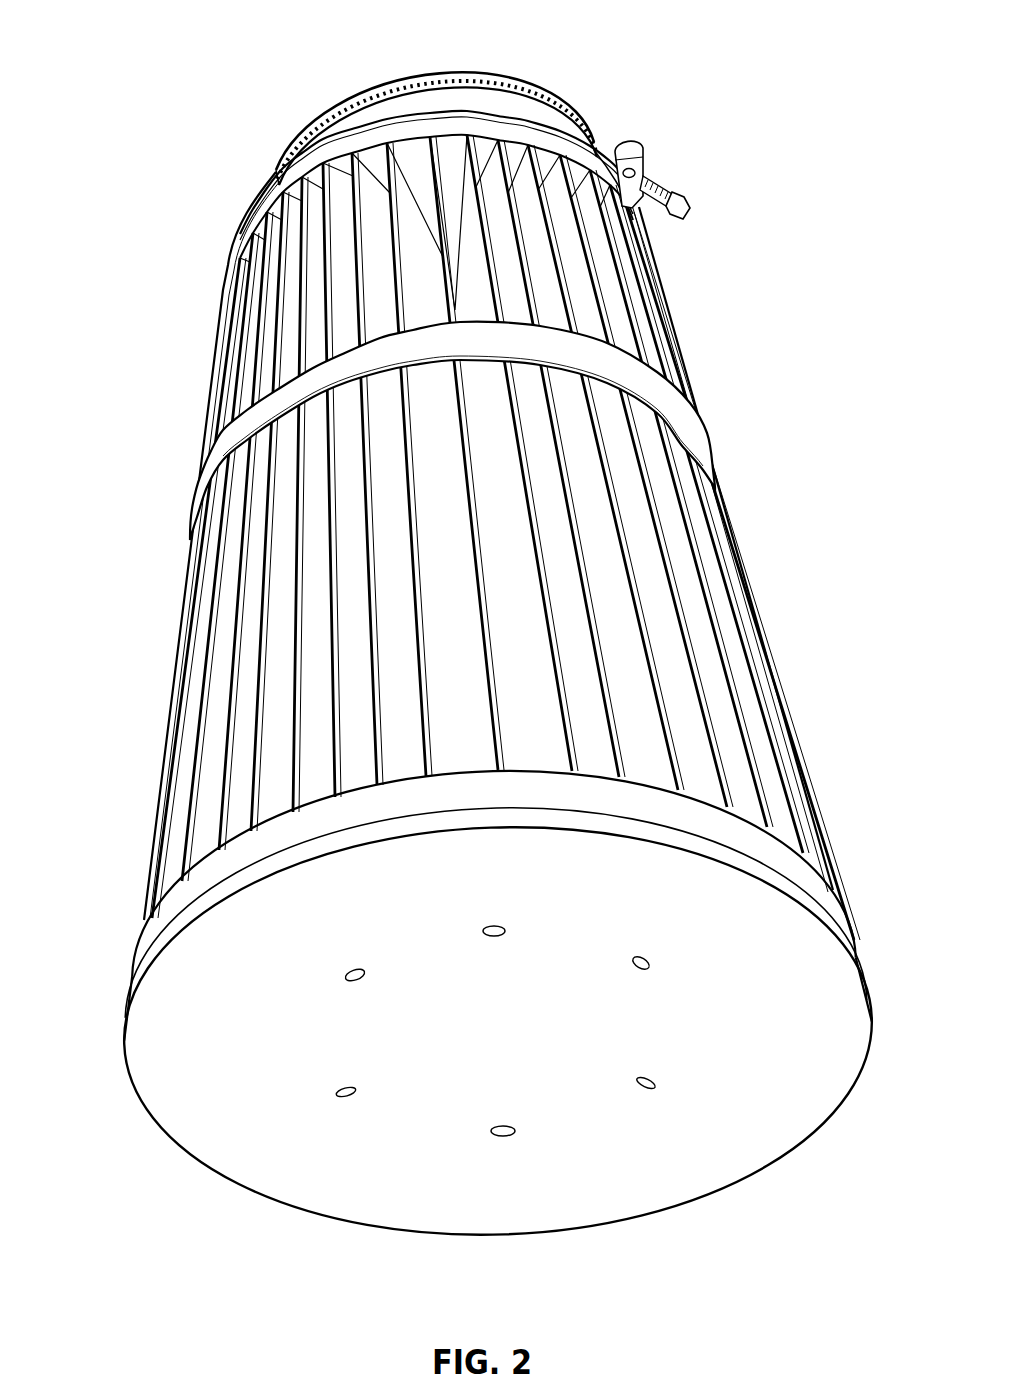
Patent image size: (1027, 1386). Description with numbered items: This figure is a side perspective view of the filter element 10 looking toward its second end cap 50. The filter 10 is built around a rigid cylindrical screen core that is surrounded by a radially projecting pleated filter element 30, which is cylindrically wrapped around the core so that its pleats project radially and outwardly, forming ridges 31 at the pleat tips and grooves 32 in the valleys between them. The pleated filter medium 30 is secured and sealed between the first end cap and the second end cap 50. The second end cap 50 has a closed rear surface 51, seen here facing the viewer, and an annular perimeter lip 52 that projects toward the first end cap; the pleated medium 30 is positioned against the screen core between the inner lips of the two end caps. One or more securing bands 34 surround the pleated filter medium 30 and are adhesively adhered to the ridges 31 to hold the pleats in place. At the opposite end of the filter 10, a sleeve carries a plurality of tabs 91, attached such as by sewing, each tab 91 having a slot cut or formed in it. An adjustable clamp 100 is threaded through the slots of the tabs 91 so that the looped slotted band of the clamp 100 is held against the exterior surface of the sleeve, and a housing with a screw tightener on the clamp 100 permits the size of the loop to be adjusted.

The filter element 10 is at (104, 52).
The pleated filter element 30 is at (327, 265).
The ridges 31 is at (377, 657).
The grooves 32 is at (452, 723).
The securing bands 34 is at (684, 418).
The second end cap 50 is at (163, 866).
The closed rear surface 51 is at (170, 1034).
The annular perimeter lip 52 is at (280, 835).
The tabs 91 is at (566, 92).
The adjustable clamp 100 is at (640, 170).